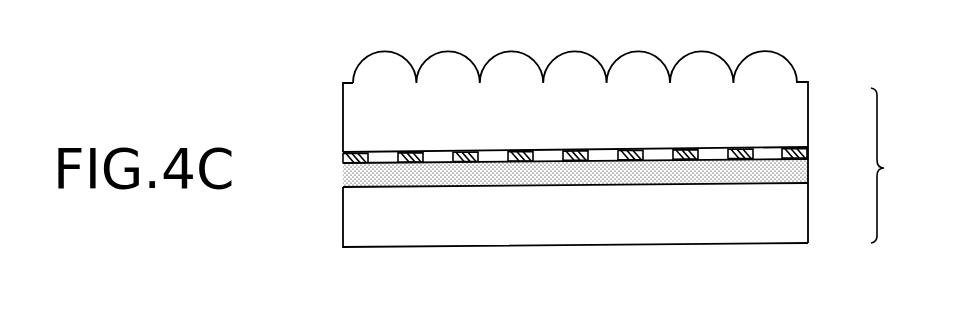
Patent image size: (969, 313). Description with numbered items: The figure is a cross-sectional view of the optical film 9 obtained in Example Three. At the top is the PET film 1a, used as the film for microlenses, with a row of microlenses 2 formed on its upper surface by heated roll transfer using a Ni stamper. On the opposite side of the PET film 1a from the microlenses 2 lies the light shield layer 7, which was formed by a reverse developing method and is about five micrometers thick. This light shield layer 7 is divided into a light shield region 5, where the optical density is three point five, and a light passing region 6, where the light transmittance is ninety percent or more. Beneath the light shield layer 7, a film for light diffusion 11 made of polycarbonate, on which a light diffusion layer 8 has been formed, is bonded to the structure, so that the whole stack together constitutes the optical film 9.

The PET film 1a is at (575, 162).
The microlenses 2 is at (782, 58).
The light shield region 5 is at (357, 165).
The light passing region 6 is at (440, 153).
The light shield layer 7 is at (343, 156).
The light diffusion layer 8 is at (797, 168).
The optical film 9 is at (888, 165).
The film for light diffusion 11 is at (575, 217).